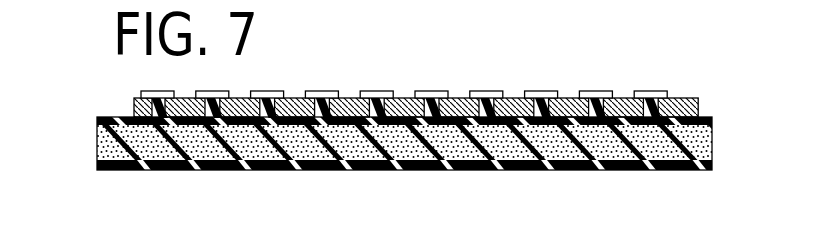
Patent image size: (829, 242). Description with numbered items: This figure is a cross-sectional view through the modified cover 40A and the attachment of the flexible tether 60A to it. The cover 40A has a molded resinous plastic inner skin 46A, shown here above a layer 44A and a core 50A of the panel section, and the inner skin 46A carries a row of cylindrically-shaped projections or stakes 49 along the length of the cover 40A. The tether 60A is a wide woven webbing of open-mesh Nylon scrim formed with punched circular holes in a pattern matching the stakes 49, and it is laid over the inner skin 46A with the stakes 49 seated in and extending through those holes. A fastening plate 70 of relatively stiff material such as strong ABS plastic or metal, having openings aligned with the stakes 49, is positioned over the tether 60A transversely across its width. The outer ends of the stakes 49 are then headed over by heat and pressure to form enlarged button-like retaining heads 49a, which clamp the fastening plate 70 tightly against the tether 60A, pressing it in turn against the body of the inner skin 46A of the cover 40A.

The cover 40A is at (383, 231).
The bottom conductive layer 44A is at (150, 171).
The inner skin 46A is at (115, 115).
The dielectric core 50A is at (457, 146).
The stakes 49 is at (333, 98).
The retaining heads 49a is at (276, 97).
The fastening plate 70 is at (353, 95).
The flexible tether 60A is at (678, 110).